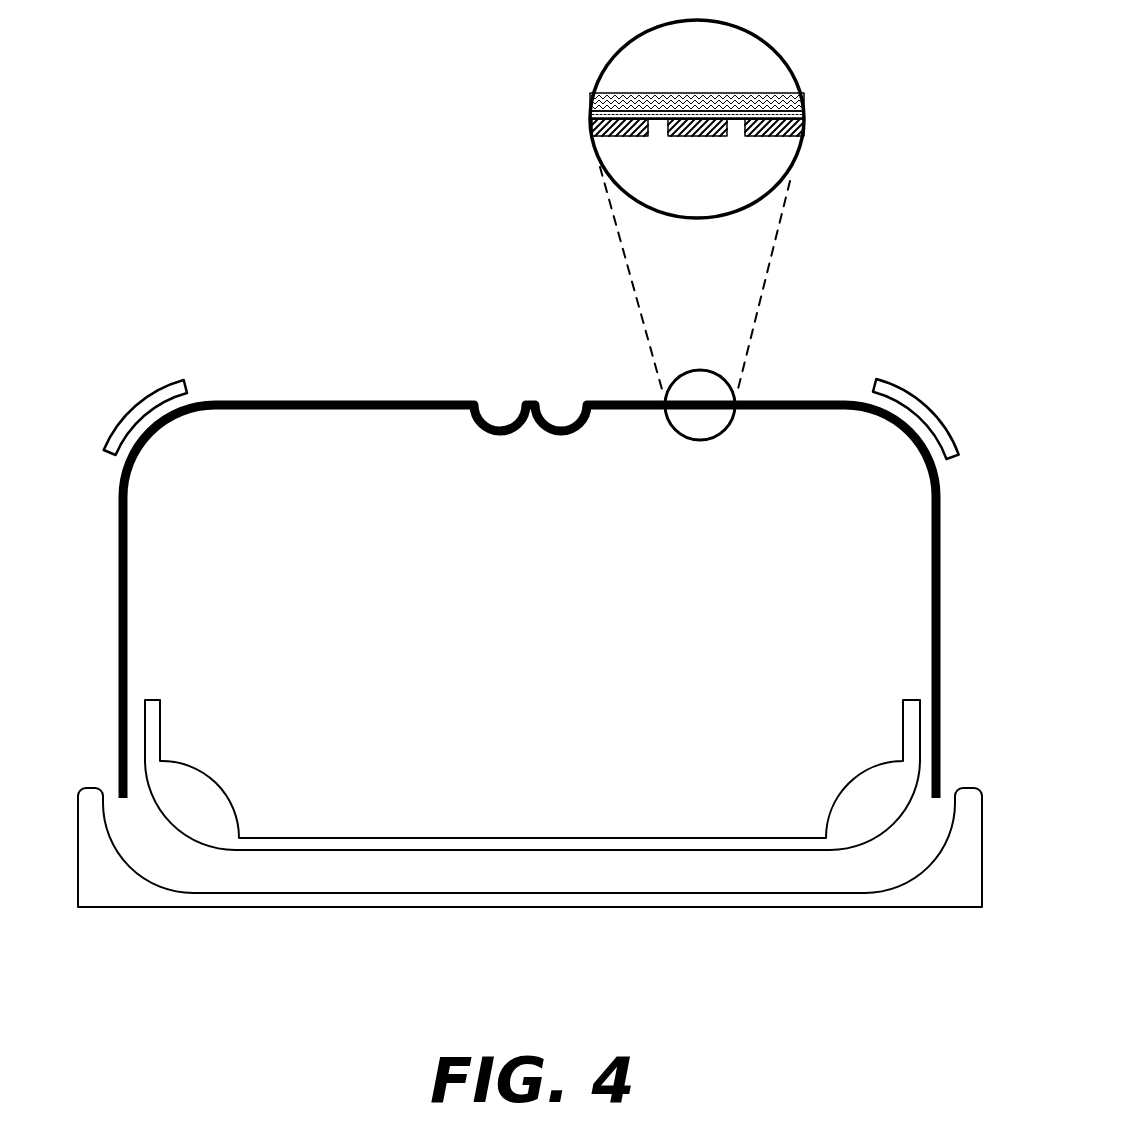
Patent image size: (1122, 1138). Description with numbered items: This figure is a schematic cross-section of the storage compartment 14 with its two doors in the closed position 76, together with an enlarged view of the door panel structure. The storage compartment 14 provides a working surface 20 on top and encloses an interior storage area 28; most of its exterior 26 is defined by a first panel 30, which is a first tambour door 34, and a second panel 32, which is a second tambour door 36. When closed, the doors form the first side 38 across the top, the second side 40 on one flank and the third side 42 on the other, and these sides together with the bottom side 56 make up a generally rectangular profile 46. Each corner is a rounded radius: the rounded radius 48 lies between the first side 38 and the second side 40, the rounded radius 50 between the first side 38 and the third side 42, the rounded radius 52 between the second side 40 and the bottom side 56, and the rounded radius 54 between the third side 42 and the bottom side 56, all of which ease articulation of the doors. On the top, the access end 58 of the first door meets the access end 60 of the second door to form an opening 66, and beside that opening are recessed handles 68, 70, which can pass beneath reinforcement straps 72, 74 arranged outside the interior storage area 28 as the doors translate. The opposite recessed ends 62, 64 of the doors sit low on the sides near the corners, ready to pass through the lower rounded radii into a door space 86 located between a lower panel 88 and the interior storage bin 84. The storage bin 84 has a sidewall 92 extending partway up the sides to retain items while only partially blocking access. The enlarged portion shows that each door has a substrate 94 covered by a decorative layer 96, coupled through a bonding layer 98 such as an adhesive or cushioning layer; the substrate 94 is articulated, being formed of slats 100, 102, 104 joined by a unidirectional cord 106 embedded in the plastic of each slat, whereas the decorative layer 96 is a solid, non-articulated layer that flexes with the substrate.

The storage compartment 14 is at (250, 278).
The closed position 76 is at (336, 212).
The working surface 20 is at (410, 401).
The interior storage area 28 is at (364, 432).
The first panel 30 is at (218, 401).
The first tambour door 34 is at (258, 401).
The first side 38 is at (372, 401).
The exterior 26 is at (760, 401).
The second panel 32 is at (805, 401).
The second tambour door 36 is at (844, 401).
The access end 58 is at (524, 400).
The access end 60 is at (537, 400).
The opening 66 is at (537, 445).
The recessed handle 68 is at (476, 428).
The recessed handle 70 is at (580, 428).
The rounded radius 48 is at (154, 448).
The rounded radius 50 is at (902, 430).
The second side 40 is at (120, 578).
The third side 42 is at (940, 622).
The rectangular profile 46 is at (940, 708).
The recessed end 62 is at (126, 797).
The recessed end 64 is at (935, 796).
The reinforcement strap 72 is at (124, 436).
The reinforcement strap 74 is at (935, 410).
The rounded radius 52 is at (215, 807).
The rounded radius 54 is at (850, 808).
The interior storage bin 84 is at (375, 836).
The sidewall 92 is at (908, 727).
The bottom side 56 is at (372, 908).
The lower panel 88 is at (626, 894).
The door space 86 is at (766, 868).
The decorative layer 96 is at (795, 100).
The bonding layer 98 is at (805, 115).
The substrate 94 is at (805, 140).
The slat 100 is at (605, 136).
The slat 102 is at (662, 137).
The cord 106 is at (740, 131).
The slat 104 is at (770, 131).